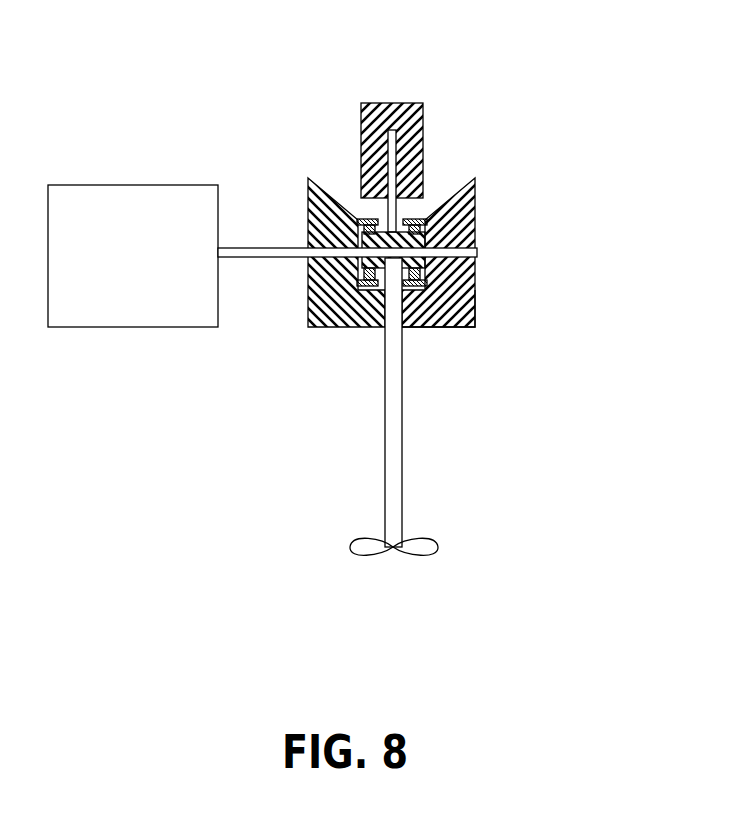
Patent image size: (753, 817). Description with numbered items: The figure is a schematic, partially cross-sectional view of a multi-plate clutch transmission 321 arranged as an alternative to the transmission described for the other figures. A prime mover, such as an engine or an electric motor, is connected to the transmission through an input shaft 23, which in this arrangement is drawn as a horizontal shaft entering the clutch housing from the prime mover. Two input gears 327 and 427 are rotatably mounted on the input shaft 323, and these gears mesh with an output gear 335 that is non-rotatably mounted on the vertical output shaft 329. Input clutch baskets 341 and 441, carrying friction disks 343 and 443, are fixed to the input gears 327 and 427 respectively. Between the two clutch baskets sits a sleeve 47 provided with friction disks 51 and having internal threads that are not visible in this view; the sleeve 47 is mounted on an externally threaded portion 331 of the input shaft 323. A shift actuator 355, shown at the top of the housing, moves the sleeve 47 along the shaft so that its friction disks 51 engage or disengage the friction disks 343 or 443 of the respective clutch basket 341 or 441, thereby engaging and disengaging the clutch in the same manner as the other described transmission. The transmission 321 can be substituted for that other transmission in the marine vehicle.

The input shaft 23 is at (113, 183).
The MPC transmission 321 is at (443, 288).
The input shaft 323 is at (262, 257).
The input gear 327 is at (309, 210).
The output shaft 329 is at (385, 472).
The externally threaded portion 331 is at (433, 320).
The output gear 335 is at (453, 328).
The input clutch basket 341 is at (360, 212).
The friction disks 343 is at (370, 215).
The shift actuator 355 is at (431, 96).
The input gear 427 is at (475, 197).
The input clutch basket 441 is at (425, 209).
The friction disks 443 is at (415, 214).
The sleeve 47 is at (368, 284).
The friction disks 51 is at (376, 290).